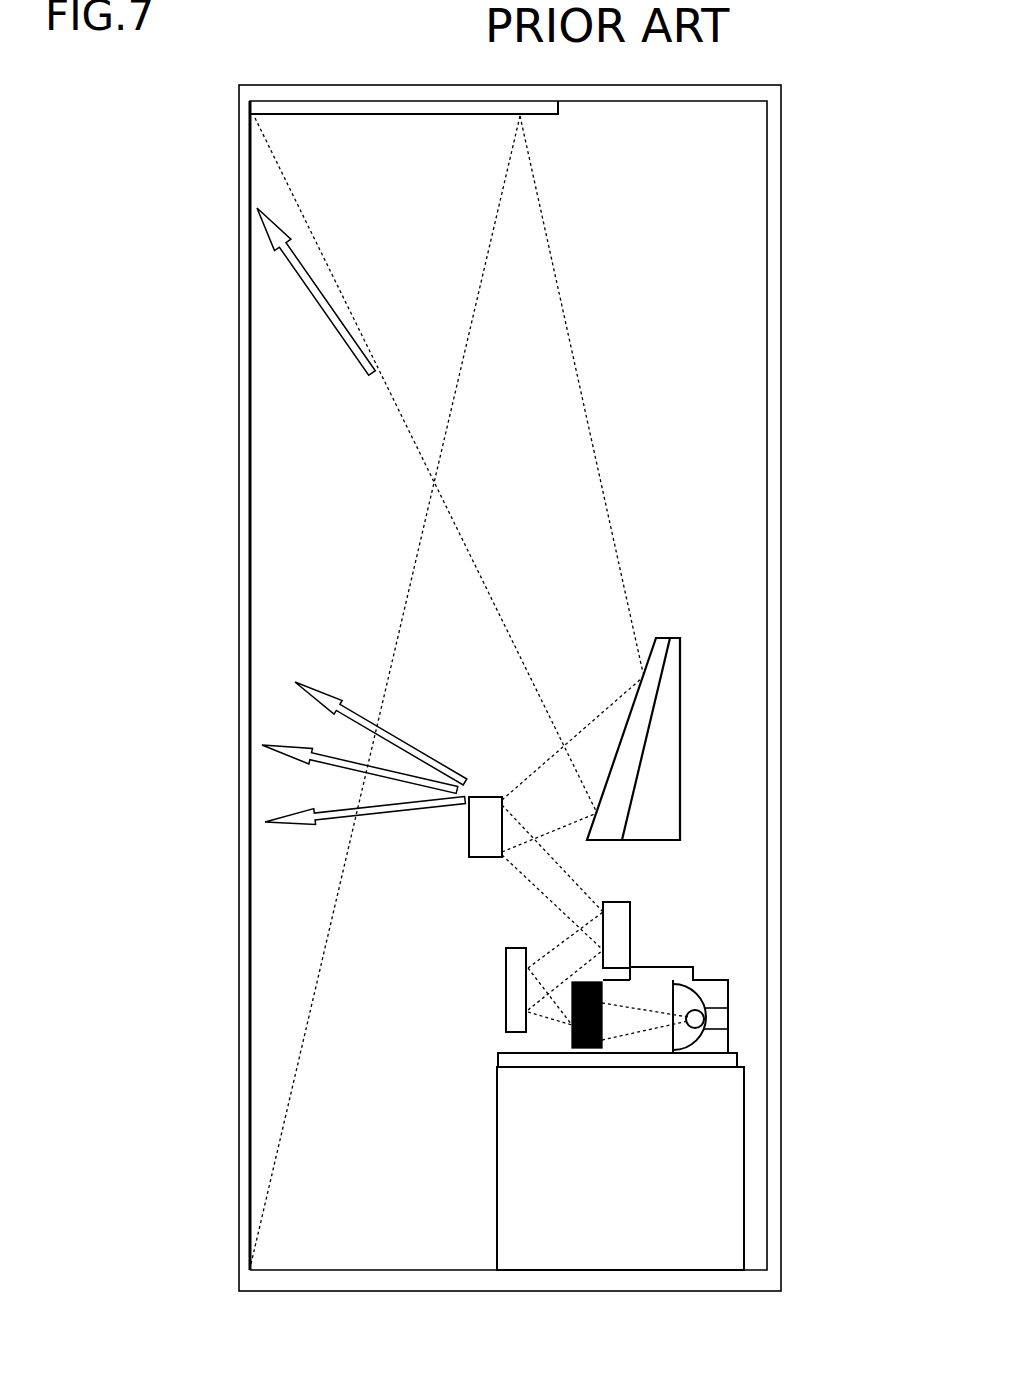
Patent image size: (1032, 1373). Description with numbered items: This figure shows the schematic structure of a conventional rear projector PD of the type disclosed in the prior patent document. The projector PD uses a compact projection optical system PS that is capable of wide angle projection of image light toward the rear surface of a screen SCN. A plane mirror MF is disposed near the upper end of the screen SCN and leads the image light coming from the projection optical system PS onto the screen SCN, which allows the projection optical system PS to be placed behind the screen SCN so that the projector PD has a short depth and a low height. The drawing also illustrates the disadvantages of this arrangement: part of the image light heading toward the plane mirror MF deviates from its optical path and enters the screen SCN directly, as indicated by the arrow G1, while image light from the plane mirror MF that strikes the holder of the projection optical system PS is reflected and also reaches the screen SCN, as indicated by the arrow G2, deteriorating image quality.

The plane mirror MF is at (558, 108).
The projector PD is at (781, 273).
The image light G1 is at (316, 291).
The reflected image light G2 is at (364, 753).
The screen SCN is at (245, 932).
The projection optical system PS is at (432, 878).